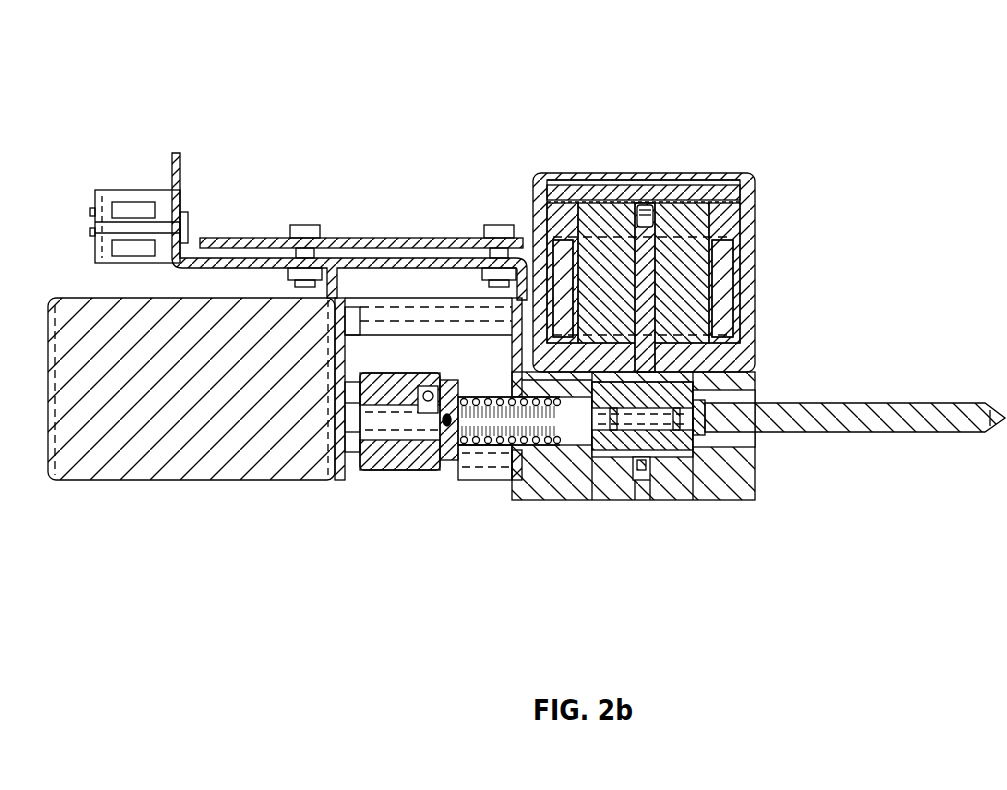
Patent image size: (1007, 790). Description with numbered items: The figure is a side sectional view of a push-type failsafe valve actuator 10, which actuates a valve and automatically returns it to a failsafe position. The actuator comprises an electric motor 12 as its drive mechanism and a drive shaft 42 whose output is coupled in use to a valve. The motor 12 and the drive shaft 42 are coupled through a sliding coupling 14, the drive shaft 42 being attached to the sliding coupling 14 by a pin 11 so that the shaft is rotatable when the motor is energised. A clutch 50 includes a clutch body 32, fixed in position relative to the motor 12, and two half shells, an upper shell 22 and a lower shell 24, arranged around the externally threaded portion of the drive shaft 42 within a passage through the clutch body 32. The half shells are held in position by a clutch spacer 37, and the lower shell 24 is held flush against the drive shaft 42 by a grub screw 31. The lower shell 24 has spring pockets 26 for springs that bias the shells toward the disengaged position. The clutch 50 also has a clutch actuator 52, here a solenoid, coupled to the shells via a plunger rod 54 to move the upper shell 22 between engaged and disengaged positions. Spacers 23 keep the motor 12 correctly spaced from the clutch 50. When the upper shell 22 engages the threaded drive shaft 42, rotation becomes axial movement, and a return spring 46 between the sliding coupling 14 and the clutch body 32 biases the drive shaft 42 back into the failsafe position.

The failsafe valve actuator 10 is at (501, 83).
The pin 11 is at (437, 442).
The electric motor 12 is at (170, 458).
The sliding coupling 14 is at (378, 462).
The upper shell 22 is at (700, 378).
The spacers 23 is at (420, 305).
The lower shell 24 is at (706, 480).
The spring pockets 26 is at (612, 452).
The grub screw 31 is at (645, 480).
The clutch body 32 is at (570, 475).
The clutch spacer 37 is at (518, 478).
The drive shaft 42 is at (893, 412).
The return spring 46 is at (480, 460).
The clutch 50 is at (684, 240).
The clutch actuator 52 is at (748, 202).
The plunger rod 54 is at (742, 262).